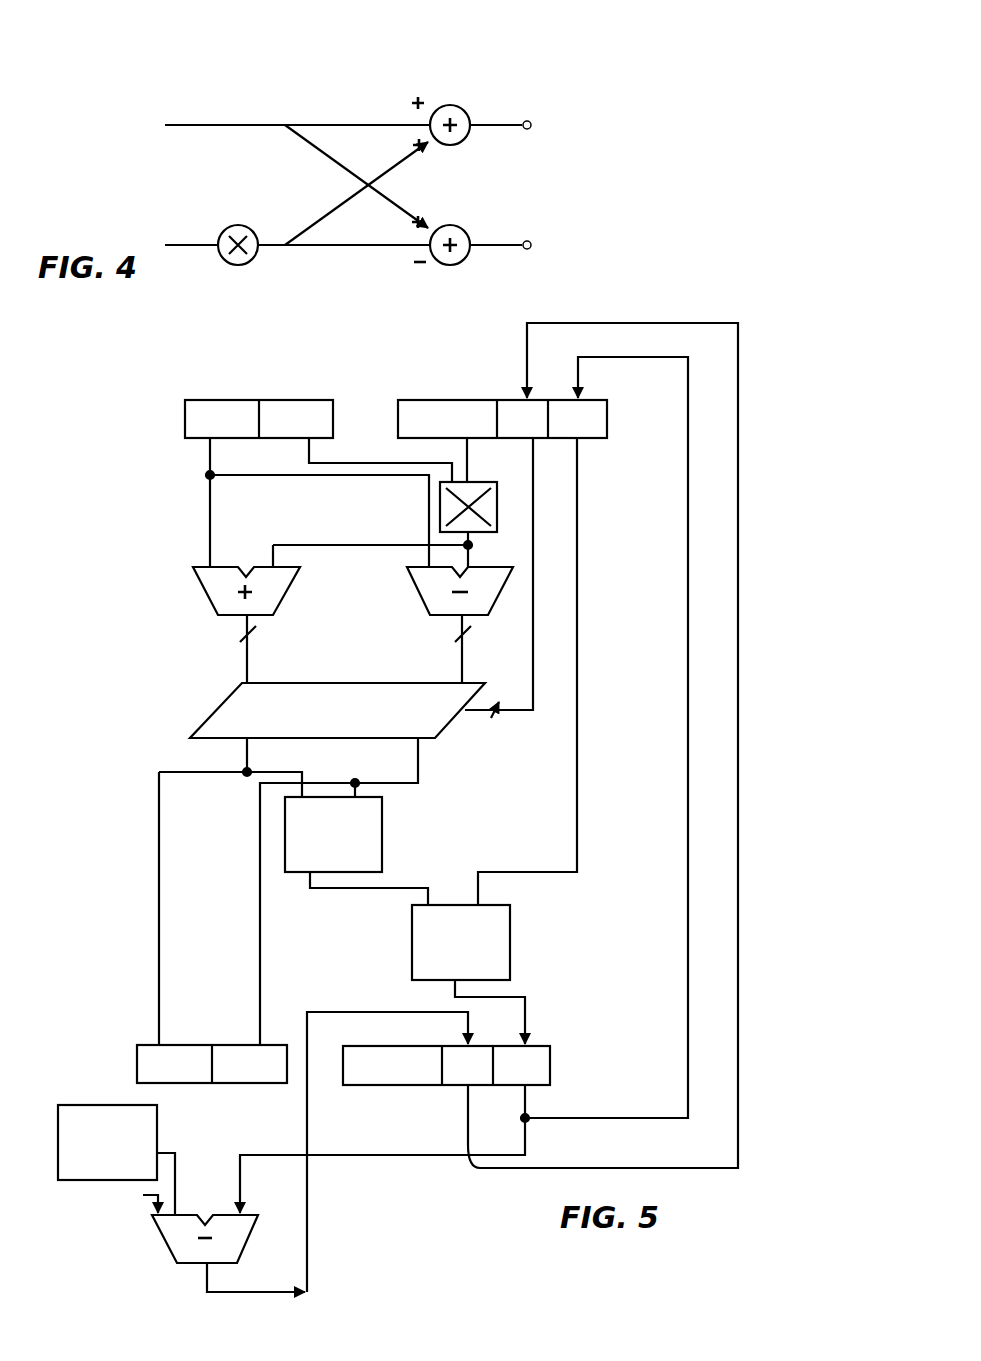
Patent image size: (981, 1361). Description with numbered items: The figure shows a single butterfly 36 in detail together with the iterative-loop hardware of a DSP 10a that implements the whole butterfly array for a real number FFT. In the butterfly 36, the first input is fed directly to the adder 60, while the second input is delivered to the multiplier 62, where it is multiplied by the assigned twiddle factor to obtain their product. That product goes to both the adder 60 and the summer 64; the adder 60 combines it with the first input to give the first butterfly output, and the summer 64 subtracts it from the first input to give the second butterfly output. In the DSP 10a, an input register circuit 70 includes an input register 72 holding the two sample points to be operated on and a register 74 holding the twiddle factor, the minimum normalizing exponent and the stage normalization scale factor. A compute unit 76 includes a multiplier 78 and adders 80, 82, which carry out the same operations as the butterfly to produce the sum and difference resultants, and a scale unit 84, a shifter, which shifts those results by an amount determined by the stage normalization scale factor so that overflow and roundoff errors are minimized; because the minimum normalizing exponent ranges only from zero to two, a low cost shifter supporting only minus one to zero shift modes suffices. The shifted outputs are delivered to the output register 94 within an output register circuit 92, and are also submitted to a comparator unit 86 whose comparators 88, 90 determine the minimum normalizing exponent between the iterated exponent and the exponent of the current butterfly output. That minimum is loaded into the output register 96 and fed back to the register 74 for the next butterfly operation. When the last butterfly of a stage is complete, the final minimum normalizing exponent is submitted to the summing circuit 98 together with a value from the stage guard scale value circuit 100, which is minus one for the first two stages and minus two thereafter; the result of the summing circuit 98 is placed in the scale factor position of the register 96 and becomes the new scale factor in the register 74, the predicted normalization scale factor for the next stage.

In FIG. 4, the butterfly 36 is at (432, 66).
In FIG. 4, the adder 60 is at (457, 106).
In FIG. 4, the multiplier 62 is at (224, 258).
In FIG. 4, the summer 64 is at (457, 226).
In FIG. 5, the DSP 10a is at (634, 312).
In FIG. 5, the input register circuit 70 is at (370, 382).
In FIG. 5, the input register 72 is at (229, 398).
In FIG. 5, the input register 74 is at (453, 398).
In FIG. 5, the compute unit 76 is at (168, 526).
In FIG. 5, the multiplier 78 is at (440, 502).
In FIG. 5, the adder 80 is at (263, 600).
In FIG. 5, the adder 82 is at (405, 596).
In FIG. 5, the scale unit 84 is at (228, 712).
In FIG. 5, the comparator unit 86 is at (196, 830).
In FIG. 5, the comparator 88 is at (384, 824).
In FIG. 5, the comparator 90 is at (455, 903).
In FIG. 5, the output register circuit 92 is at (293, 988).
In FIG. 5, the output register 94 is at (231, 1043).
In FIG. 5, the output register 96 is at (552, 1062).
In FIG. 5, the summing circuit 98 is at (247, 1230).
In FIG. 5, the stage guard scale value circuit 100 is at (157, 1112).